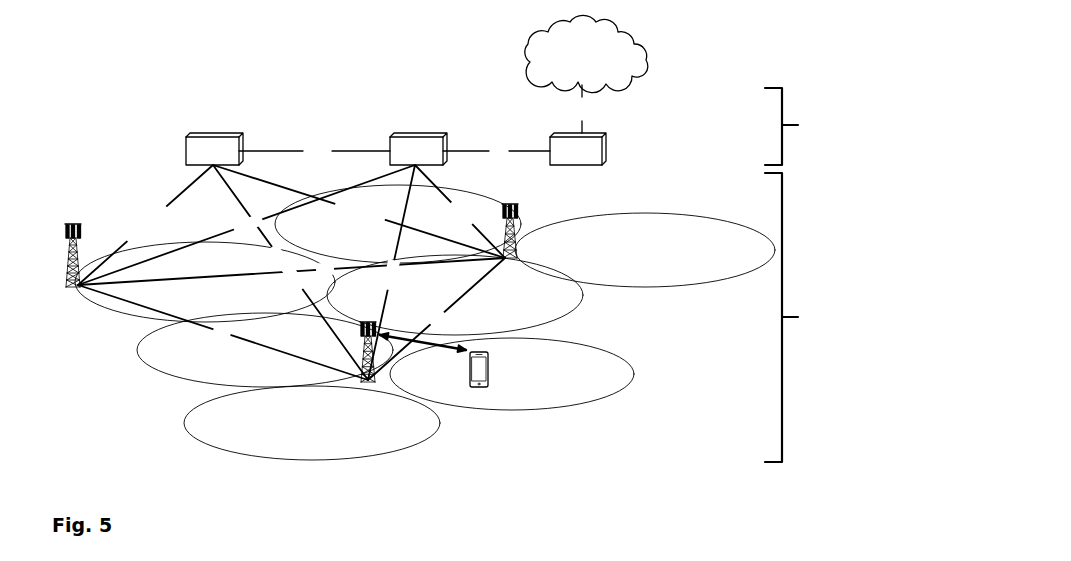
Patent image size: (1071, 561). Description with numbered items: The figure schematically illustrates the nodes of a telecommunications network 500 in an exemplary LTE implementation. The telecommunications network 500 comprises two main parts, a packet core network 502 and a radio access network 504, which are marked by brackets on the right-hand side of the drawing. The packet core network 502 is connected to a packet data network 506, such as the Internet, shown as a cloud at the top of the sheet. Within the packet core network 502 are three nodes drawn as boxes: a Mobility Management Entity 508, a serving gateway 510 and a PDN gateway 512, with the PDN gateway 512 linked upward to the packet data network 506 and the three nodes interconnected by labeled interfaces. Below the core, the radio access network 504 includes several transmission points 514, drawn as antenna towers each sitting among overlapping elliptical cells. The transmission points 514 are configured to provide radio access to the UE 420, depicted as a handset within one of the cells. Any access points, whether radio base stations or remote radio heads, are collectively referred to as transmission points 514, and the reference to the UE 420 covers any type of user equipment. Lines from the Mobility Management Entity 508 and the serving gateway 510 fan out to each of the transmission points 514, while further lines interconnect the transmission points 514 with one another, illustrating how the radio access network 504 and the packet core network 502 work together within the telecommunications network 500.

The telecommunications network 500 is at (97, 35).
The packet core network 502 is at (513, 124).
The radio access network 504 is at (430, 326).
The packet data network 506 is at (632, 62).
The Mobility Management Entity 508 is at (205, 133).
The serving gateway 510 is at (410, 133).
The PDN gateway 512 is at (553, 135).
The transmission points 514 is at (73, 290).
The UE 420 is at (480, 388).